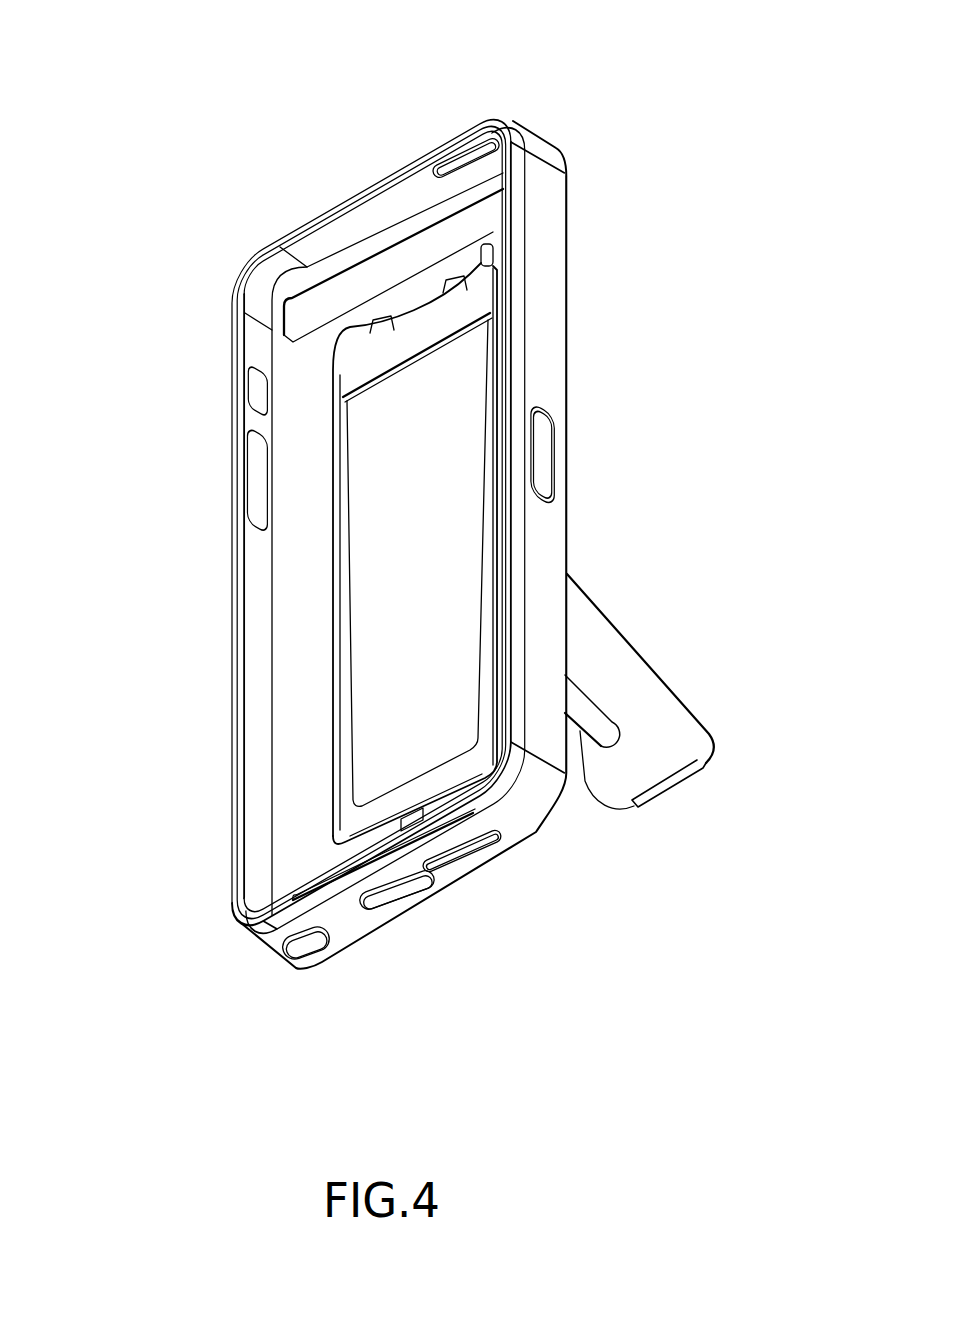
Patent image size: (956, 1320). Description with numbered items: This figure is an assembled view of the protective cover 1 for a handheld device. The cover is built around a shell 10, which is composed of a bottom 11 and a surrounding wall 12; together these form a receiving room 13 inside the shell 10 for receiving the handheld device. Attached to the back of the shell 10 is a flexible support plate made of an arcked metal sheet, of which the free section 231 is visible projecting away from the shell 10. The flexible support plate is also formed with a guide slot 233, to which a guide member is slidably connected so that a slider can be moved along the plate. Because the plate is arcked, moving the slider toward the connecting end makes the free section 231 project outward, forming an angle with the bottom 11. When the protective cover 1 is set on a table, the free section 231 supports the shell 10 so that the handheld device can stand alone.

The protective cover 1 is at (330, 38).
The shell 10 is at (567, 285).
The bottom 11 is at (380, 470).
The surrounding wall 12 is at (545, 332).
The receiving room 13 is at (300, 630).
The free section 231 is at (600, 662).
The guide slot 233 is at (602, 731).